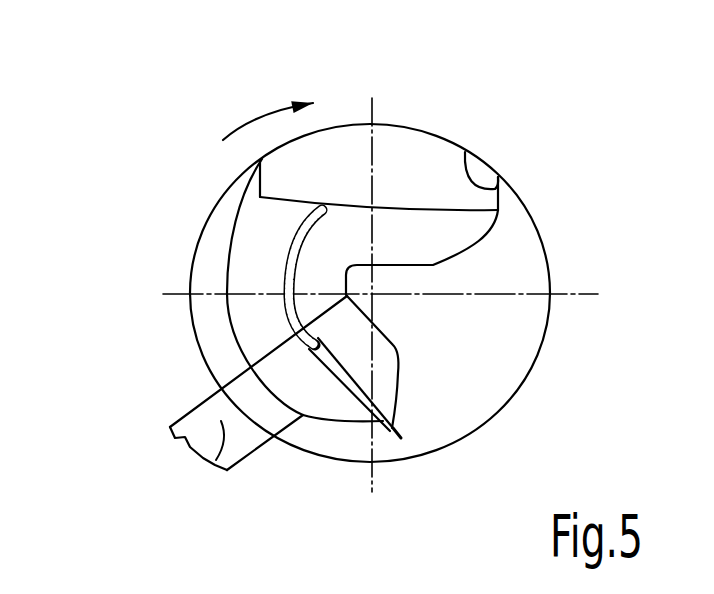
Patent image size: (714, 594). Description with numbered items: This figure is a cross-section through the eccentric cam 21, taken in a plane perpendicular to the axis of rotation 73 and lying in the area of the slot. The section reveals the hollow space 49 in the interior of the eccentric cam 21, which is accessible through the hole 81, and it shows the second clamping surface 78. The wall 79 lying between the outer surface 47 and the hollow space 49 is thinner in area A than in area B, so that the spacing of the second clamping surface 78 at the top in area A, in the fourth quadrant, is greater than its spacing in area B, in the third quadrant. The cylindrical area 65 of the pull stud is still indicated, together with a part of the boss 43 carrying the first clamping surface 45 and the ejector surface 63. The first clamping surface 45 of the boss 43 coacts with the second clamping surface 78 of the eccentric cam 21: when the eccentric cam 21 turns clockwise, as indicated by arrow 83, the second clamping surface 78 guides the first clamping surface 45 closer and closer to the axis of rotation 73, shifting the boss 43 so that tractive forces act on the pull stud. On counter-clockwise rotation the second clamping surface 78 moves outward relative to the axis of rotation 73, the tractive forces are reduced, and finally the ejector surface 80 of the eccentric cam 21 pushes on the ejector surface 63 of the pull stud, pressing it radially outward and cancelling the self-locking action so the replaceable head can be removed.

The eccentric cam 21 is at (176, 322).
The boss 43 is at (397, 432).
The first clamping surface 45 is at (317, 382).
The outer surface 47 is at (535, 218).
The hollow space 49 is at (310, 200).
The ejector surface 63 is at (383, 380).
The cylindrical area 65 is at (210, 462).
The axis of rotation 73 is at (373, 297).
The second clamping surface 78 is at (257, 263).
The wall 79 is at (225, 217).
The ejector surface 80 is at (465, 150).
The hole 81 is at (467, 248).
The arrow 83 is at (243, 127).
The area A is at (212, 210).
The area B is at (255, 362).